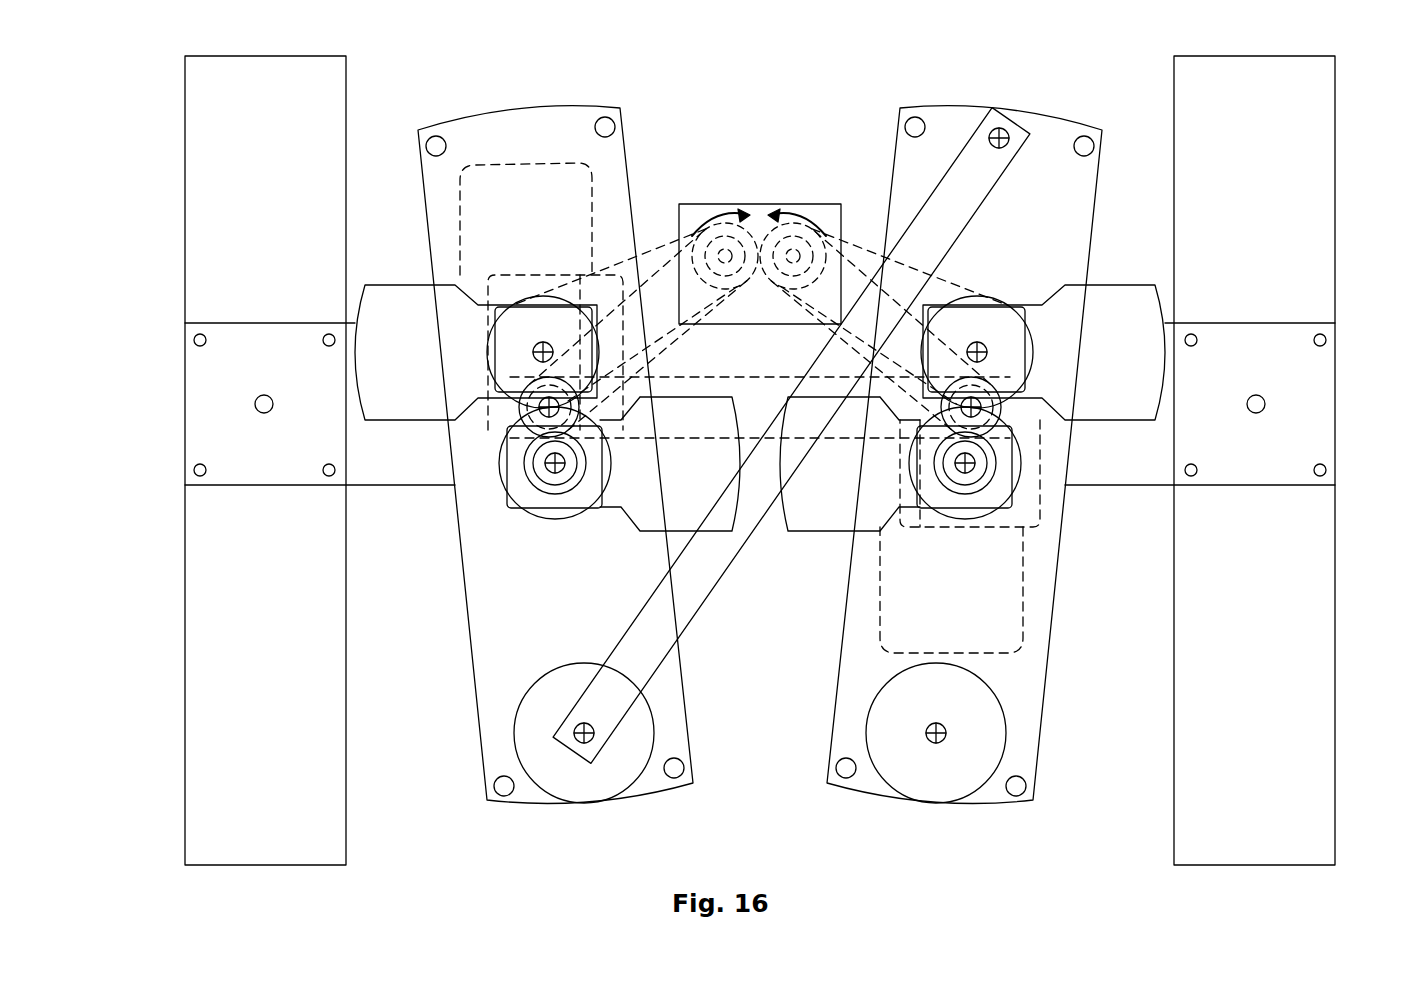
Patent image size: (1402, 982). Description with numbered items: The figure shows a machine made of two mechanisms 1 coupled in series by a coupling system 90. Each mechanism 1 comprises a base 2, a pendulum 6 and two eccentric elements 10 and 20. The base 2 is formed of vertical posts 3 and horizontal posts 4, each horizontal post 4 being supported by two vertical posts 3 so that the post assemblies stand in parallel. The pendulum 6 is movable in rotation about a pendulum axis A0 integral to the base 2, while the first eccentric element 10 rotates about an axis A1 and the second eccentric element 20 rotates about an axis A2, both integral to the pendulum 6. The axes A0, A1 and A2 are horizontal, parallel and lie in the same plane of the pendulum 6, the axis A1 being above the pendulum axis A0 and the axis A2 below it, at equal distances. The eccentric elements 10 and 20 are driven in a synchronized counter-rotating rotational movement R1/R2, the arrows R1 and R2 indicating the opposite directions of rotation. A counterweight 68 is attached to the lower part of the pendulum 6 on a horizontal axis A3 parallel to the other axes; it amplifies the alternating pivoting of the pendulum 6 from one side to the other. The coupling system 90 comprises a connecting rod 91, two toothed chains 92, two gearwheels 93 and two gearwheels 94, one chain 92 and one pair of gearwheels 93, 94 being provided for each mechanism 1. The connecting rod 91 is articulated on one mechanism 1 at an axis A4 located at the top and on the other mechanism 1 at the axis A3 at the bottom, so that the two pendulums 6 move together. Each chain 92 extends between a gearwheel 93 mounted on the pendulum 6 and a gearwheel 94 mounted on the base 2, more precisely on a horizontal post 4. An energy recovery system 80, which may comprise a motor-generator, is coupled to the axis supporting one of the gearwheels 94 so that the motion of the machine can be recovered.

The mechanism 1 is at (656, 108).
The base 2 is at (135, 289).
The vertical post 3 is at (754, 460).
The horizontal post 4 is at (398, 487).
The pendulum 6 is at (618, 215).
The first eccentric element 10 is at (385, 300).
The second eccentric element 20 is at (650, 520).
The counterweight 68 is at (760, 765).
The energy recovery system 80 is at (717, 175).
The coupling system 90 is at (760, 250).
The connecting rod 91 is at (791, 403).
The toothed chain 92 is at (668, 340).
The gearwheel 93 is at (540, 436).
The gearwheel 94 is at (700, 245).
The pendulum axis A0 is at (539, 410).
The axis of rotation of the first eccentric element A1 is at (543, 342).
The axis of rotation of the second eccentric element A2 is at (555, 472).
The counterweight axis A3 is at (584, 745).
The connecting rod articulation axis A4 is at (1003, 128).
The rotational movement of the first eccentric element R1 is at (400, 316).
The rotational movement of the second eccentric element R2 is at (702, 414).